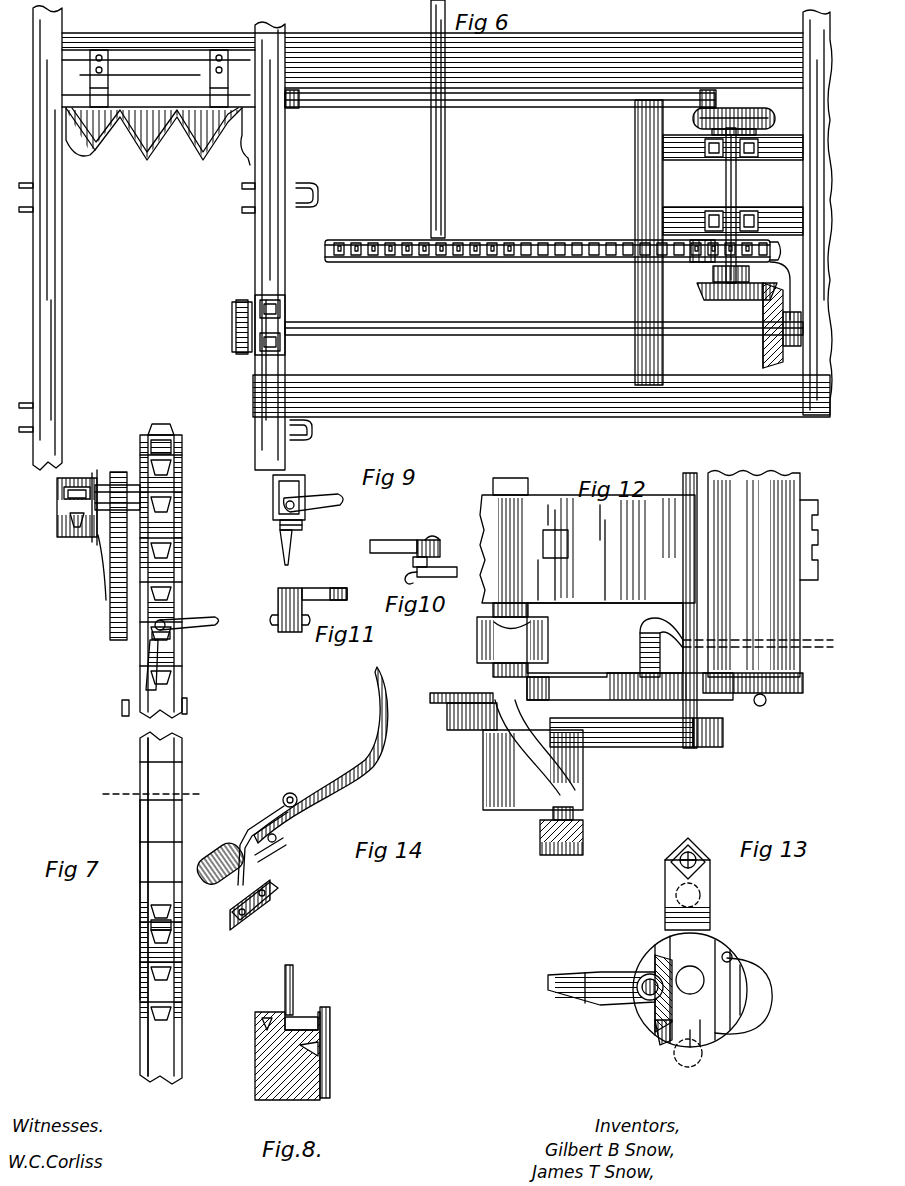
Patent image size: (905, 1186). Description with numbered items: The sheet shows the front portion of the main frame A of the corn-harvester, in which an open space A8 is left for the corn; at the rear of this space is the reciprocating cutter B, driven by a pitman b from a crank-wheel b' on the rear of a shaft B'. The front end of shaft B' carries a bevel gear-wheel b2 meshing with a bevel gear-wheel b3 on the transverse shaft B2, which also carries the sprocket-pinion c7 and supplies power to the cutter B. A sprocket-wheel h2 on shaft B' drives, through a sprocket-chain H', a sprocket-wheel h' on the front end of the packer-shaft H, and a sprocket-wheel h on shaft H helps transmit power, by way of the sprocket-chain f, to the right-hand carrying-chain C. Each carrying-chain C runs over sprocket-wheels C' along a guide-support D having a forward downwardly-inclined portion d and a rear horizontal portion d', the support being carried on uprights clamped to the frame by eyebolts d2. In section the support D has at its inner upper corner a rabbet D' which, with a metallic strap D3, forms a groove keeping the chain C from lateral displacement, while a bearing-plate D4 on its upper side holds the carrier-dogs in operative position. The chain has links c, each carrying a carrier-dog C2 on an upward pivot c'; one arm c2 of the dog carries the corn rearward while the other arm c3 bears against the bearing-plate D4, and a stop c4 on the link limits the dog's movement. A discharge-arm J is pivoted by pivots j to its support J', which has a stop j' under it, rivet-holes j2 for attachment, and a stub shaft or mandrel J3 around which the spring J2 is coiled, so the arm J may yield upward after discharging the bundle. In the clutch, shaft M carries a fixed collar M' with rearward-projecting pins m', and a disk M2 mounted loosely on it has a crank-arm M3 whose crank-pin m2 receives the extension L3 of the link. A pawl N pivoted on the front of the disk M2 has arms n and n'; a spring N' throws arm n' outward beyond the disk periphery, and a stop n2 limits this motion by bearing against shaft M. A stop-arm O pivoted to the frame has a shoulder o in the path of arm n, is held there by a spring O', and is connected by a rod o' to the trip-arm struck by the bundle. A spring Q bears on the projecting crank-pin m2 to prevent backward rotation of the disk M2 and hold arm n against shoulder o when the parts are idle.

In FIG. 6, the main frame A is at (424, 238).
In FIG. 6, the open space A8 is at (149, 272).
In FIG. 6, the cutter B is at (158, 139).
In FIG. 6, the packer-shaft H is at (448, 119).
In FIG. 6, the pitman b is at (500, 111).
In FIG. 6, the crank-wheel b' is at (734, 97).
In FIG. 6, the shaft B' is at (746, 205).
In FIG. 6, the sprocket-wheel h2 is at (690, 247).
In FIG. 6, the sprocket-wheel h' is at (489, 276).
In FIG. 6, the sprocket-chain H' is at (553, 265).
In FIG. 6, the bevel gear-wheel b2 is at (704, 292).
In FIG. 6, the transverse shaft B2 is at (670, 336).
In FIG. 6, the bevel gear-wheel b3 is at (765, 340).
In FIG. 6, the sprocket-pinion c7 is at (232, 327).
In FIG. 6, the eyebolts d2 is at (320, 196).
In FIG. 7, the carrying-chain C is at (176, 754).
In FIG. 8, the carrying-chain C is at (301, 1010).
In FIG. 10, the carrying-chain C is at (436, 567).
In FIG. 7, the sprocket-wheels C' is at (181, 693).
In FIG. 7, the arm of carrier-dog c3 is at (66, 537).
In FIG. 10, the arm of carrier-dog c3 is at (378, 540).
In FIG. 11, the arm of carrier-dog c3 is at (278, 592).
In FIG. 7, the sprocket-chain f is at (92, 540).
In FIG. 7, the rear horizontal portion d' is at (108, 566).
In FIG. 7, the pivot c' is at (183, 601).
In FIG. 9, the pivot c' is at (270, 503).
In FIG. 7, the arm of carrier-dog c2 is at (218, 620).
In FIG. 9, the arm of carrier-dog c2 is at (306, 498).
In FIG. 10, the arm of carrier-dog c2 is at (441, 550).
In FIG. 11, the arm of carrier-dog c2 is at (327, 583).
In FIG. 7, the stop c4 is at (170, 636).
In FIG. 9, the stop c4 is at (294, 528).
In FIG. 10, the stop c4 is at (425, 540).
In FIG. 7, the metallic strap D3 is at (187, 708).
In FIG. 8, the metallic strap D3 is at (330, 1046).
In FIG. 7, the bearing-plate D4 is at (127, 710).
In FIG. 8, the bearing-plate D4 is at (285, 978).
In FIG. 7, the guide-support D is at (163, 899).
In FIG. 8, the guide-support D is at (280, 1056).
In FIG. 7, the forward downwardly-inclined portion d is at (115, 887).
In FIG. 7, the sprocket-wheel h is at (150, 794).
In FIG. 8, the rabbet D' is at (256, 1021).
In FIG. 9, the link c is at (276, 496).
In FIG. 11, the link c is at (297, 614).
In FIG. 9, the carrier-dog C2 is at (313, 510).
In FIG. 12, the spring Q is at (650, 738).
In FIG. 12, the shaft M is at (495, 605).
In FIG. 12, the collar M' is at (499, 640).
In FIG. 12, the pins m' is at (490, 669).
In FIG. 13, the pins m' is at (711, 988).
In FIG. 12, the spring N' is at (459, 688).
In FIG. 13, the spring N' is at (759, 993).
In FIG. 12, the arm of pawl n is at (630, 683).
In FIG. 13, the arm of pawl n is at (611, 978).
In FIG. 12, the stop n2 is at (545, 690).
In FIG. 13, the stop n2 is at (700, 960).
In FIG. 12, the stop-arm O is at (651, 649).
In FIG. 12, the shoulder o is at (641, 698).
In FIG. 12, the rod o' is at (758, 650).
In FIG. 12, the spring O' is at (753, 697).
In FIG. 12, the disk M2 is at (470, 730).
In FIG. 13, the disk M2 is at (660, 940).
In FIG. 12, the crank-arm M3 is at (520, 772).
In FIG. 13, the crank-arm M3 is at (710, 888).
In FIG. 12, the crank-pin m2 is at (560, 736).
In FIG. 13, the crank-pin m2 is at (680, 860).
In FIG. 12, the extension of link L3 is at (583, 837).
In FIG. 13, the pawl N is at (601, 1004).
In FIG. 13, the arm of pawl n' is at (658, 1035).
In FIG. 14, the discharge-arms J is at (321, 755).
In FIG. 14, the springs J2 is at (294, 794).
In FIG. 14, the support J' is at (263, 843).
In FIG. 14, the stub shaft or mandrel J3 is at (220, 854).
In FIG. 14, the pivots j is at (282, 847).
In FIG. 14, the stop j' is at (288, 864).
In FIG. 14, the rivet-holes j2 is at (275, 895).